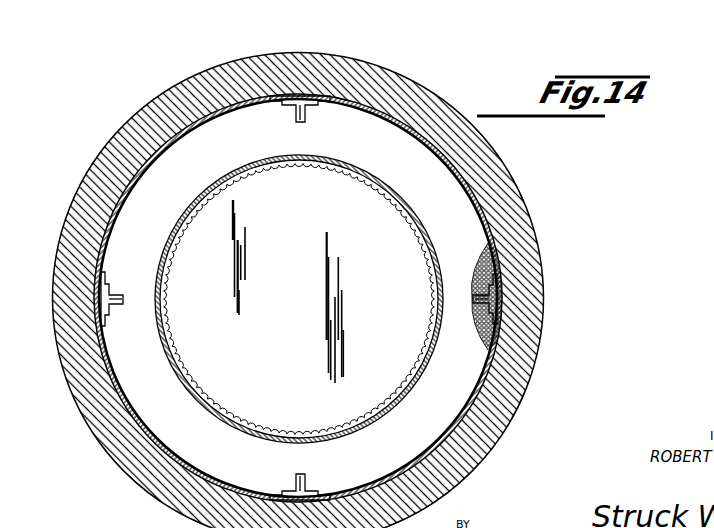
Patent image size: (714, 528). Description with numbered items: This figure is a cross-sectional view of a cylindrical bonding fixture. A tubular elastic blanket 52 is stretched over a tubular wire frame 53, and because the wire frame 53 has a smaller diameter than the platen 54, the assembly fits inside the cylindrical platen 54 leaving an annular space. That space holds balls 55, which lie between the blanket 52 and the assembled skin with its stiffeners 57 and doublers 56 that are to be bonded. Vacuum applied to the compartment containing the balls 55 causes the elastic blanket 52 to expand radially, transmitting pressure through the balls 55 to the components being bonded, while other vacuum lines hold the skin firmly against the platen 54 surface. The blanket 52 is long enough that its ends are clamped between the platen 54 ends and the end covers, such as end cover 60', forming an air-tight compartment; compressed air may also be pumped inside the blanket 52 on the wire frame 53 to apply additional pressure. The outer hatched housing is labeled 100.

The elastic blanket 52 is at (357, 167).
The wire frame 53 is at (403, 203).
The platen 54 is at (78, 262).
The balls 55 is at (492, 250).
The doublers 56 is at (498, 307).
The stiffeners 57 is at (490, 291).
The outer housing 100 is at (494, 367).
The end cover 60' is at (288, 291).